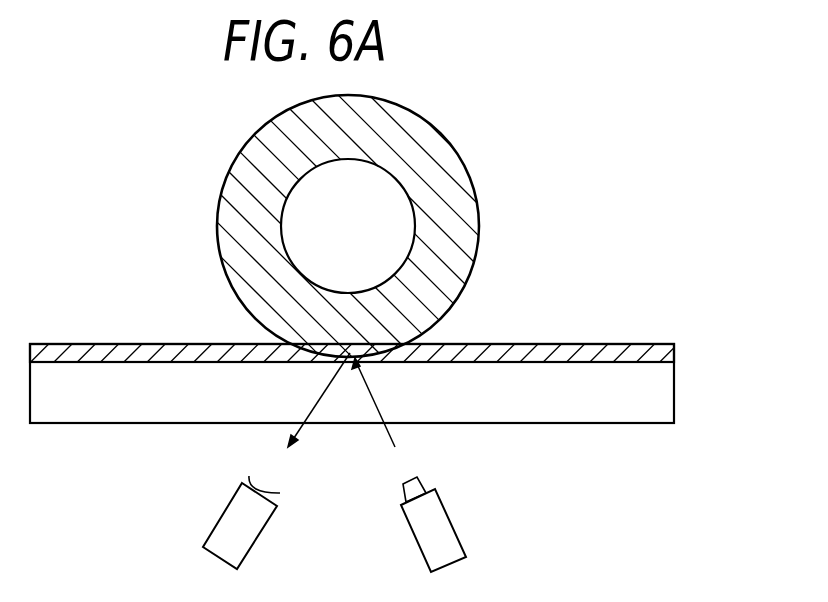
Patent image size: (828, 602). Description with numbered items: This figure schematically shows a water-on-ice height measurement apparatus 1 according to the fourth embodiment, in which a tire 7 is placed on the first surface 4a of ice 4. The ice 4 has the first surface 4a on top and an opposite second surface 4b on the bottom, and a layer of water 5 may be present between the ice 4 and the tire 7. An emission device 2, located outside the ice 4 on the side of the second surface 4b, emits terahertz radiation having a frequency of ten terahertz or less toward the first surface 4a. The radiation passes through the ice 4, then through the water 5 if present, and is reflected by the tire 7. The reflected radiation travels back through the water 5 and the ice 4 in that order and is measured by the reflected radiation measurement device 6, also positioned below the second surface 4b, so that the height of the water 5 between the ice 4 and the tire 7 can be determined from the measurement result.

The apparatus for measuring a height of water on ice 1 is at (60, 249).
The emission device 2 is at (443, 530).
The ice 4 is at (665, 393).
The first surface 4a is at (53, 344).
The second surface 4b is at (52, 424).
The water 5 is at (672, 349).
The reflected radiation measurement device 6 is at (255, 527).
The tire 7 is at (463, 225).